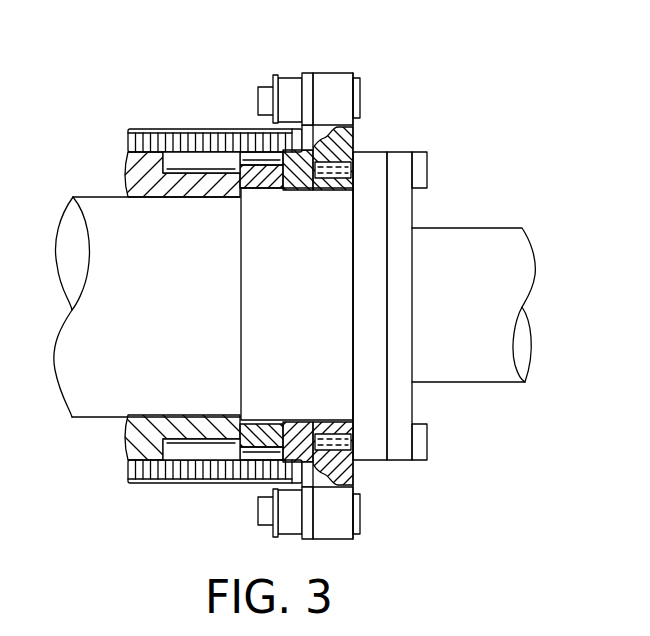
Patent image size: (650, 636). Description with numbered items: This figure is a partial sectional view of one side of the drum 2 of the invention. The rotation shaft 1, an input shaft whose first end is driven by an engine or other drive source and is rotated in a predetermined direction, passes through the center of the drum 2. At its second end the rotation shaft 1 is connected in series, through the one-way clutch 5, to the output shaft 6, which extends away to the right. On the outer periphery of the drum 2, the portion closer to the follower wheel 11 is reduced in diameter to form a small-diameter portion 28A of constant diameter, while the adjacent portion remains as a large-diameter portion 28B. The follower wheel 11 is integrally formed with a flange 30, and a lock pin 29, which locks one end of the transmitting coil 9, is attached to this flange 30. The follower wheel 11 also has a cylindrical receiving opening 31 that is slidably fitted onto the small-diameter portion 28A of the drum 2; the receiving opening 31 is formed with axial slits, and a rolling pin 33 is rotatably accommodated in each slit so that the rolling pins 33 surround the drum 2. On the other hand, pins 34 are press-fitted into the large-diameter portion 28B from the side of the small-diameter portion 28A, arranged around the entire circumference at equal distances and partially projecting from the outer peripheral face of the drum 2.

The rotation shaft 1 is at (103, 218).
The drum 2 is at (128, 440).
The one-way clutch 5 is at (340, 225).
The output shaft 6 is at (495, 240).
The transmitting coil 9 is at (137, 130).
The follower wheel 11 is at (372, 75).
The small-diameter portion 28A is at (252, 145).
The large-diameter portion 28B is at (152, 463).
The lock pin 29 is at (290, 80).
The flange 30 is at (338, 78).
The cylindrical receiving opening 31 is at (268, 83).
The rolling pin 33 is at (287, 147).
The pins 34 is at (188, 160).